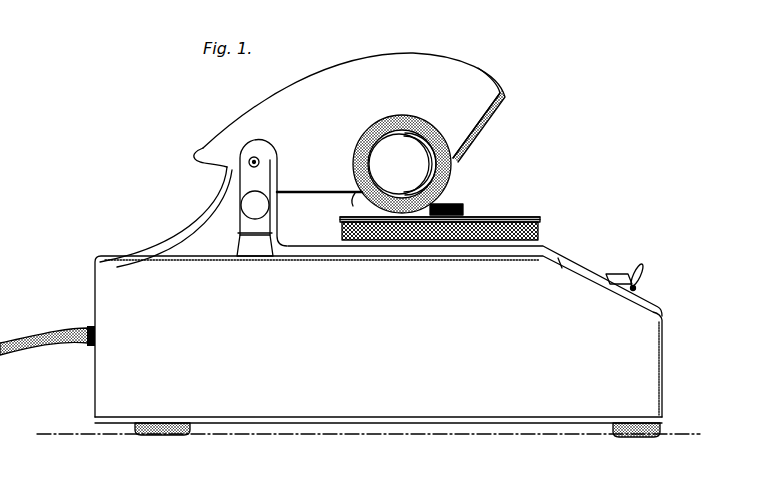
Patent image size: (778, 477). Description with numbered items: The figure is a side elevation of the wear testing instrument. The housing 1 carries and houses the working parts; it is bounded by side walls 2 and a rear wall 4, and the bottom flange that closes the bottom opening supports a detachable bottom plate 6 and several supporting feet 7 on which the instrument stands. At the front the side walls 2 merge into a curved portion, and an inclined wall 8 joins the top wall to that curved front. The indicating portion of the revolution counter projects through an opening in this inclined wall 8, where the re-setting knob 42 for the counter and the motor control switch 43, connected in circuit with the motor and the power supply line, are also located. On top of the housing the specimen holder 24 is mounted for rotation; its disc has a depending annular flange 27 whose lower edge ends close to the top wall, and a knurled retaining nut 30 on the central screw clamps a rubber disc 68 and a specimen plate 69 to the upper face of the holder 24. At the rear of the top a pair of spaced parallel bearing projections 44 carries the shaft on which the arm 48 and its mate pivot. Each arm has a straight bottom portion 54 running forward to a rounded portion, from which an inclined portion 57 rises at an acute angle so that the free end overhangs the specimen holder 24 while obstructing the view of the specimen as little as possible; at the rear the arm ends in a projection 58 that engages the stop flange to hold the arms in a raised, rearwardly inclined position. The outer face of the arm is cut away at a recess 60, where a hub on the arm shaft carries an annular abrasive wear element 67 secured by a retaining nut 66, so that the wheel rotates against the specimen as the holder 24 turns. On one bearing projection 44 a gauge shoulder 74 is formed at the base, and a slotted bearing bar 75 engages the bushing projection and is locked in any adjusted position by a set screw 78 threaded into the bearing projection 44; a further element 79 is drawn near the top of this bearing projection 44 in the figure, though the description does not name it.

The housing 1 is at (668, 352).
The side walls 2 is at (312, 400).
The rear wall 4 is at (93, 318).
The detachable bottom plate 6 is at (240, 424).
The supporting feet 7 is at (170, 434).
The inclined wall 8 is at (596, 270).
The specimen holder 24 is at (545, 226).
The depending annular flange 27 is at (342, 232).
The knurled retaining nut 30 is at (455, 204).
The re-setting knob 42 is at (562, 263).
The motor control switch 43 is at (643, 284).
The bearing projections 44 is at (210, 210).
The arm 48 is at (470, 72).
The straight portion 54 is at (330, 193).
The inclined portion 57 is at (467, 148).
The projection 58 is at (200, 152).
The recess 60 is at (353, 204).
The retaining nut 66 is at (392, 162).
The abrasive disc or wear element 67 is at (453, 180).
The rubber disc 68 is at (486, 217).
The specimen plate 69 is at (505, 217).
The gauge shoulder 74 is at (248, 245).
The bearing bar 75 is at (260, 224).
The set screw 78 is at (266, 205).
The pivot screw 79 is at (262, 160).